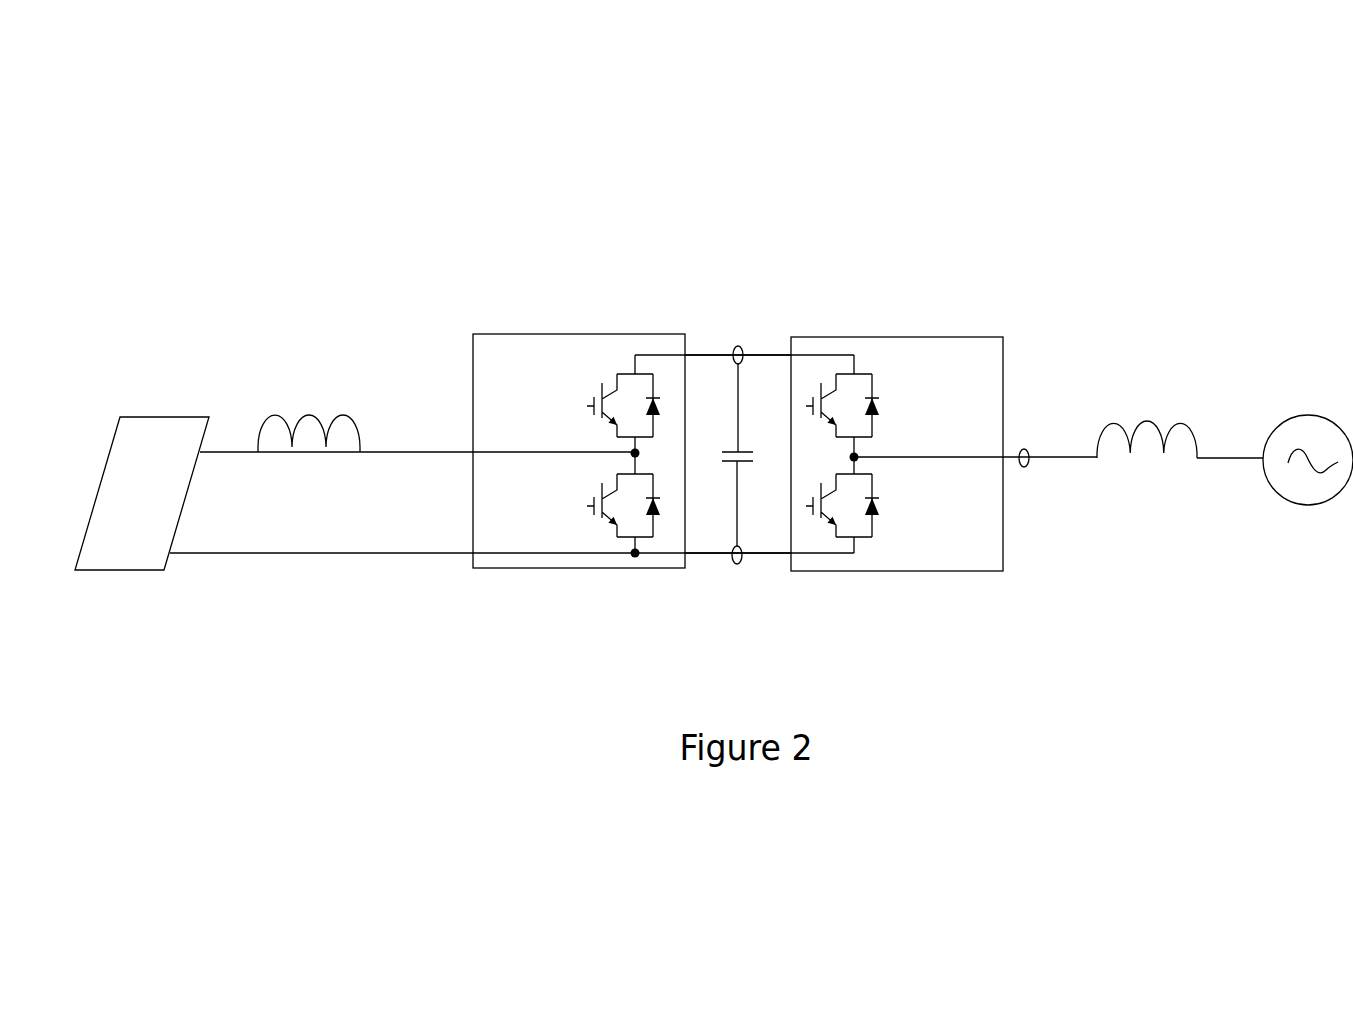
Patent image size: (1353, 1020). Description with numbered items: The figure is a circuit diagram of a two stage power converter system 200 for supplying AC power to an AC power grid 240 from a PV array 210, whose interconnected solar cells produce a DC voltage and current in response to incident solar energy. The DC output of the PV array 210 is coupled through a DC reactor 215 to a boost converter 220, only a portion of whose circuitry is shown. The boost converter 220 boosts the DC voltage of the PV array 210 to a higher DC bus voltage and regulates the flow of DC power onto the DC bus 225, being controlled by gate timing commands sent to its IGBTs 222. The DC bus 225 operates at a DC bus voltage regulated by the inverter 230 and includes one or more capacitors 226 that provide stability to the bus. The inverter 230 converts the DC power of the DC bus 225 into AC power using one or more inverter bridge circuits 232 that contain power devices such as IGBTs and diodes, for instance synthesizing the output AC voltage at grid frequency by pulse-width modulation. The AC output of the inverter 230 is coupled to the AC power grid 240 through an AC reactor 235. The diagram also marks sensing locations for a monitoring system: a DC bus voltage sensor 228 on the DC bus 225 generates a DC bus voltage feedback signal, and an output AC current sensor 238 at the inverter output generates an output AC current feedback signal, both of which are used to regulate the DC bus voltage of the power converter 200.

The two stage power converter system 200 is at (803, 186).
The PV array 210 is at (164, 417).
The DC reactor 215 is at (310, 418).
The boost converter 220 is at (511, 334).
The IGBTs 222 is at (620, 374).
The DC bus 225 is at (704, 354).
The capacitor 226 is at (753, 462).
The DC bus voltage sensor 228 is at (740, 346).
The inverter 230 is at (982, 337).
The inverter bridge circuit 232 is at (868, 374).
The AC reactor 235 is at (1147, 423).
The output AC current sensor 238 is at (1025, 449).
The AC power grid 240 is at (1312, 415).